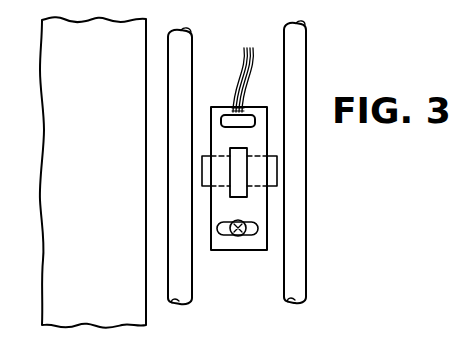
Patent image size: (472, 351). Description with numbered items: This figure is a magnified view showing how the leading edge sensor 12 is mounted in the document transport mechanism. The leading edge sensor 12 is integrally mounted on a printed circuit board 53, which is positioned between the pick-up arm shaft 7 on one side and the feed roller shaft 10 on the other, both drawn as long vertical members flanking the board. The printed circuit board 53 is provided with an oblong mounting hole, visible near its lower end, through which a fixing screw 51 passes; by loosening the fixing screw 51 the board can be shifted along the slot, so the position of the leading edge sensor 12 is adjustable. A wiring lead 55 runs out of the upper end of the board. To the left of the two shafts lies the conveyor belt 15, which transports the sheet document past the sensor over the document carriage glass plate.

The pick-up arm shaft 7 is at (186, 47).
The feed roller shaft 10 is at (302, 57).
The leading edge sensor 12 is at (240, 170).
The conveyor belt 15 is at (140, 310).
The fixing screw 51 is at (237, 237).
The printed circuit board 53 is at (258, 210).
The cable 55 is at (247, 72).